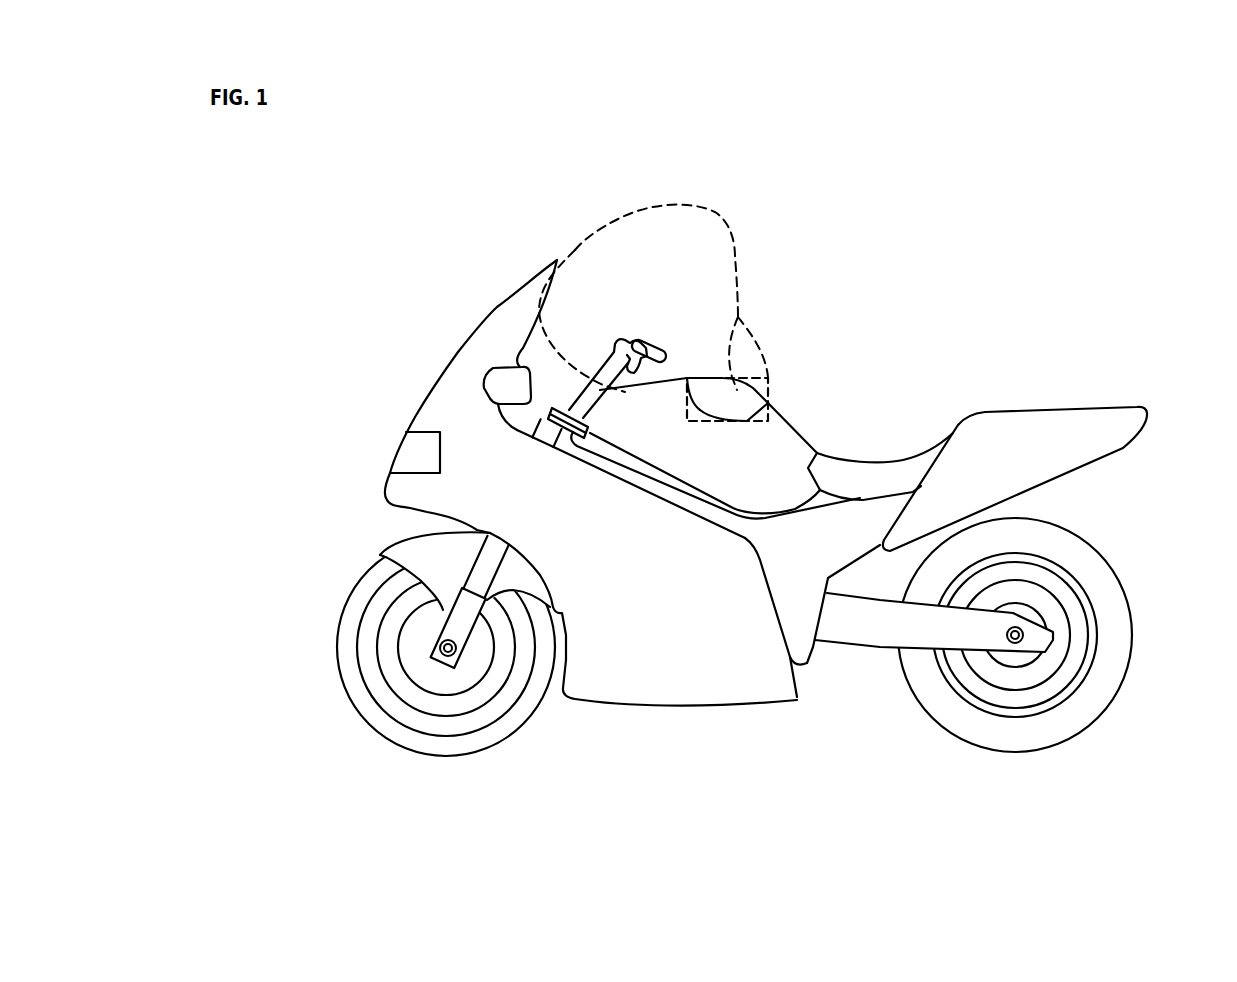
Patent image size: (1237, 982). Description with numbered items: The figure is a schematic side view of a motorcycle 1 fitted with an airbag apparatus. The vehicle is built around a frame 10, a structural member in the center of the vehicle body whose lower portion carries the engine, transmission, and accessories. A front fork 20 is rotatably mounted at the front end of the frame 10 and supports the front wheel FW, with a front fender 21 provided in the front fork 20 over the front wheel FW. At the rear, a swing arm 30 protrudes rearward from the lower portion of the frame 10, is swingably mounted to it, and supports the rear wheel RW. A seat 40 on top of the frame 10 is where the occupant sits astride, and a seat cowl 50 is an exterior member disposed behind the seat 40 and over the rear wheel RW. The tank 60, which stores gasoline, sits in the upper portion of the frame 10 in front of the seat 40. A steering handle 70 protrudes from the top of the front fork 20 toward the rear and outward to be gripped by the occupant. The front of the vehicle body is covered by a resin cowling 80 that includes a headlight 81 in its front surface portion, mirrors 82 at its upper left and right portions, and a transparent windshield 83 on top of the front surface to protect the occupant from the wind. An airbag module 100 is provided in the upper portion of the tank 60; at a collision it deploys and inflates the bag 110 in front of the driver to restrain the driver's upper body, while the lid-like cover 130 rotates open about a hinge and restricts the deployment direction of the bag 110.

The motorcycle 1 is at (296, 247).
The frame 10 is at (797, 570).
The front fork 20 is at (480, 567).
The front fender 21 is at (415, 560).
The swing arm 30 is at (884, 638).
The seat 40 is at (905, 460).
The seat cowl 50 is at (1085, 410).
The tank 60 is at (706, 460).
The steering handle 70 is at (607, 368).
The cowling 80 is at (615, 565).
The headlight 81 is at (398, 456).
The mirrors 82 is at (493, 386).
The windshield 83 is at (492, 307).
The airbag module 100 is at (801, 342).
The bag 110 is at (747, 228).
The cover 130 is at (733, 397).
The front wheel FW is at (353, 602).
The rear wheel RW is at (1122, 598).